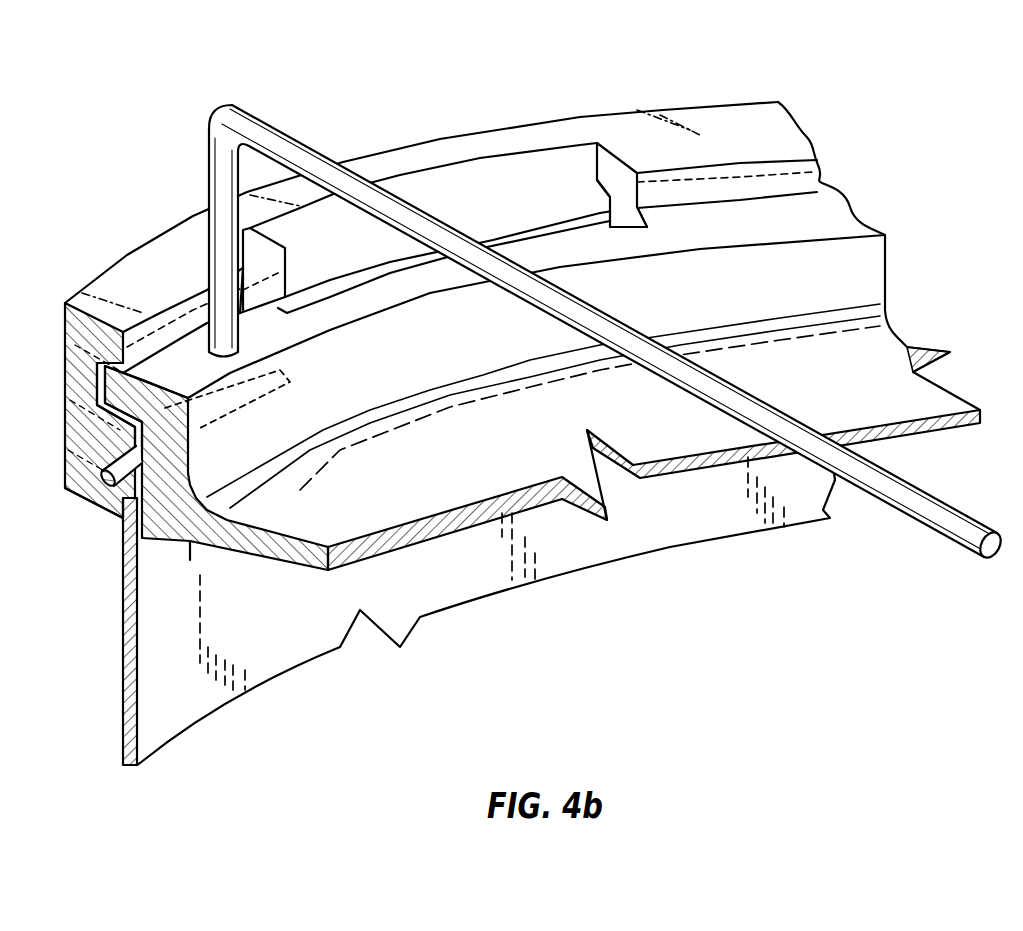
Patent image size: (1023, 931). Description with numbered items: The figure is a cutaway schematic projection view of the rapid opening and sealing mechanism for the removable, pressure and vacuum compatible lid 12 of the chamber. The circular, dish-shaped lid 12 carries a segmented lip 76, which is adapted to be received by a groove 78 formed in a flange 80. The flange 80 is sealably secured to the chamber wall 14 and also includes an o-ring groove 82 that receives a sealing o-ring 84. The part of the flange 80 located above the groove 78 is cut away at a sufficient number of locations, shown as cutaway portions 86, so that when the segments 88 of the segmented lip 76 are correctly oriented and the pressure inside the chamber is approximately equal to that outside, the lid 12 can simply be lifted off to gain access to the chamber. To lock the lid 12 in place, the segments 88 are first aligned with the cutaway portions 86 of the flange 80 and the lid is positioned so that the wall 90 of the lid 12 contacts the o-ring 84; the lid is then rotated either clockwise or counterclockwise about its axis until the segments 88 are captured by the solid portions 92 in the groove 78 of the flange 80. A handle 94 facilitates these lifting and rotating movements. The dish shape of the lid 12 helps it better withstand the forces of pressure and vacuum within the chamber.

The lid 12 is at (261, 522).
The wall 14 is at (120, 578).
The segmented lip 76 is at (133, 391).
The groove 78 is at (65, 367).
The flange 80 is at (60, 421).
The o-ring groove 82 is at (130, 449).
The sealing o-ring 84 is at (65, 488).
The cutaway portions 86 is at (463, 162).
The segments 88 is at (187, 327).
The wall of lid 90 is at (190, 477).
The solid portions 92 is at (115, 275).
The handle 94 is at (960, 504).